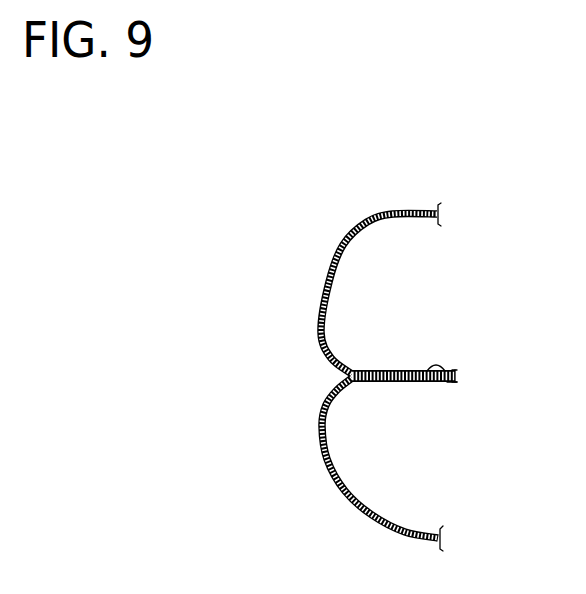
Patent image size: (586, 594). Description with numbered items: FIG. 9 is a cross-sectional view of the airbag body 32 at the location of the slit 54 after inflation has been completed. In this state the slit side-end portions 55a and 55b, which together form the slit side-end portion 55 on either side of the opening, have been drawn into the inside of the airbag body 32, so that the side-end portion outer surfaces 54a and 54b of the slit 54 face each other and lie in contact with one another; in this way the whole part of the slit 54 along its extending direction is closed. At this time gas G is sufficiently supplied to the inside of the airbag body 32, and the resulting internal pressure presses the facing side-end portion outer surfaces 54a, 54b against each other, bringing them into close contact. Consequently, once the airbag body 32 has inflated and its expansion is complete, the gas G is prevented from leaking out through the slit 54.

The airbag body 32 is at (386, 328).
The slit 54 is at (382, 383).
The side-end portion outer surface 54a is at (405, 377).
The side-end portion outer surface 54b is at (451, 383).
The slit side-end portion 55 is at (343, 378).
The slit side-end portion 55a is at (456, 372).
The slit side-end portion 55b is at (458, 381).
The gas G is at (410, 228).